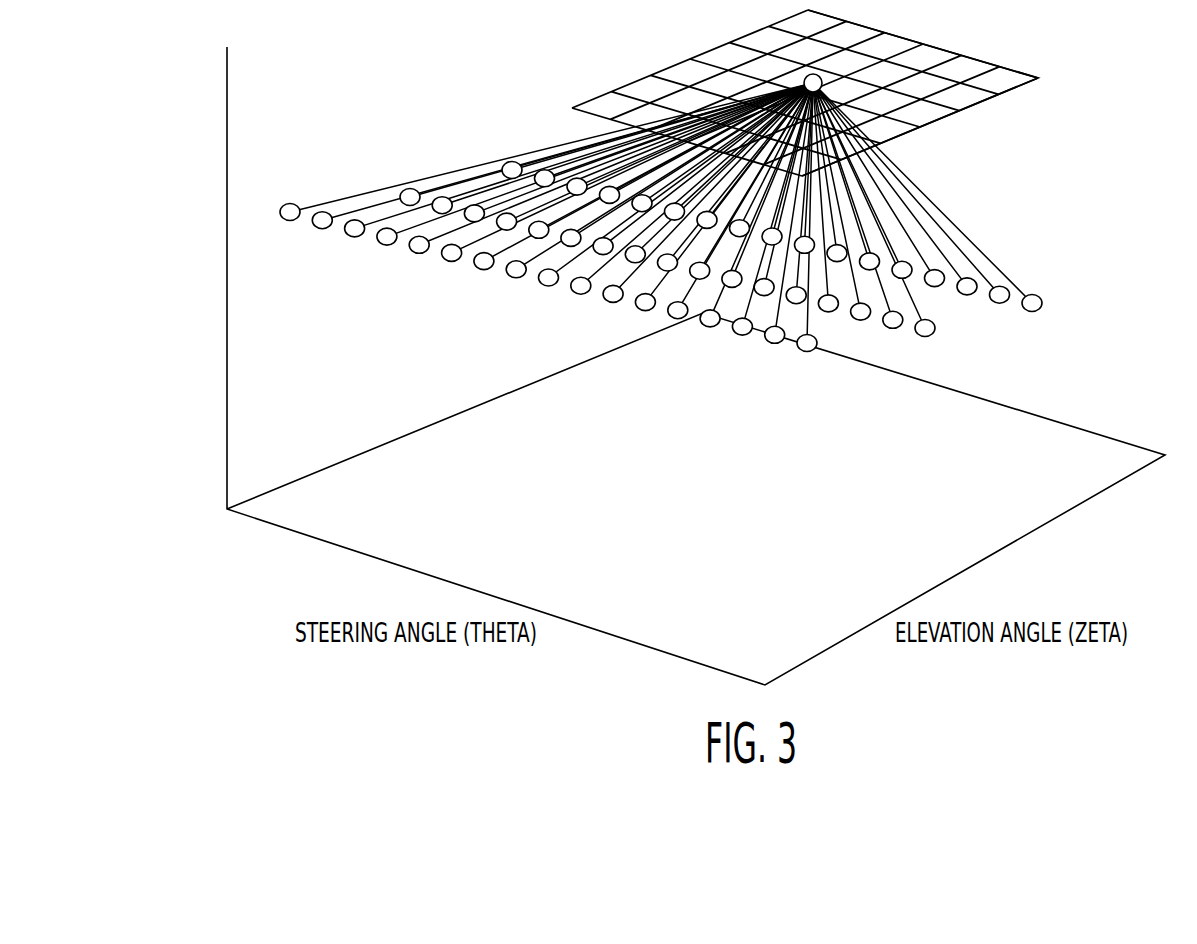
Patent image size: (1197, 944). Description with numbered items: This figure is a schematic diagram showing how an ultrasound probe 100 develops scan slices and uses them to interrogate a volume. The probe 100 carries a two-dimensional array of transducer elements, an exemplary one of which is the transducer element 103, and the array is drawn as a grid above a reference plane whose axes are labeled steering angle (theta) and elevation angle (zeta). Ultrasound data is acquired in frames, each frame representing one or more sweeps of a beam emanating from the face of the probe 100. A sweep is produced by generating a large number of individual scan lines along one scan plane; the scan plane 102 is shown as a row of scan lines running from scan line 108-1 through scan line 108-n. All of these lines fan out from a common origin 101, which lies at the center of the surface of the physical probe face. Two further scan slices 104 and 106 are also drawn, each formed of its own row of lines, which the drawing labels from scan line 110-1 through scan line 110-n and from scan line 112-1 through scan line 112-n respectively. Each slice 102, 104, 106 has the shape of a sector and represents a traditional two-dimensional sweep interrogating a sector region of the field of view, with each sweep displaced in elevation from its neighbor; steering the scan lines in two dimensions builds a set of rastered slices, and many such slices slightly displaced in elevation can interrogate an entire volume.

The probe 100 is at (907, 35).
The origin 101 is at (804, 80).
The scan plane 102 is at (573, 250).
The transducer element 103 is at (1022, 72).
The scan slice 104 is at (731, 239).
The scan slice 106 is at (825, 219).
The scan line 108-1 is at (290, 203).
The scan line 108-n is at (806, 352).
The first scan line of second row 110-1 is at (410, 188).
The last scan line of second row 110-n is at (1016, 355).
The first scan line of third row 112-1 is at (511, 161).
The last scan line of third row 112-n is at (1043, 302).